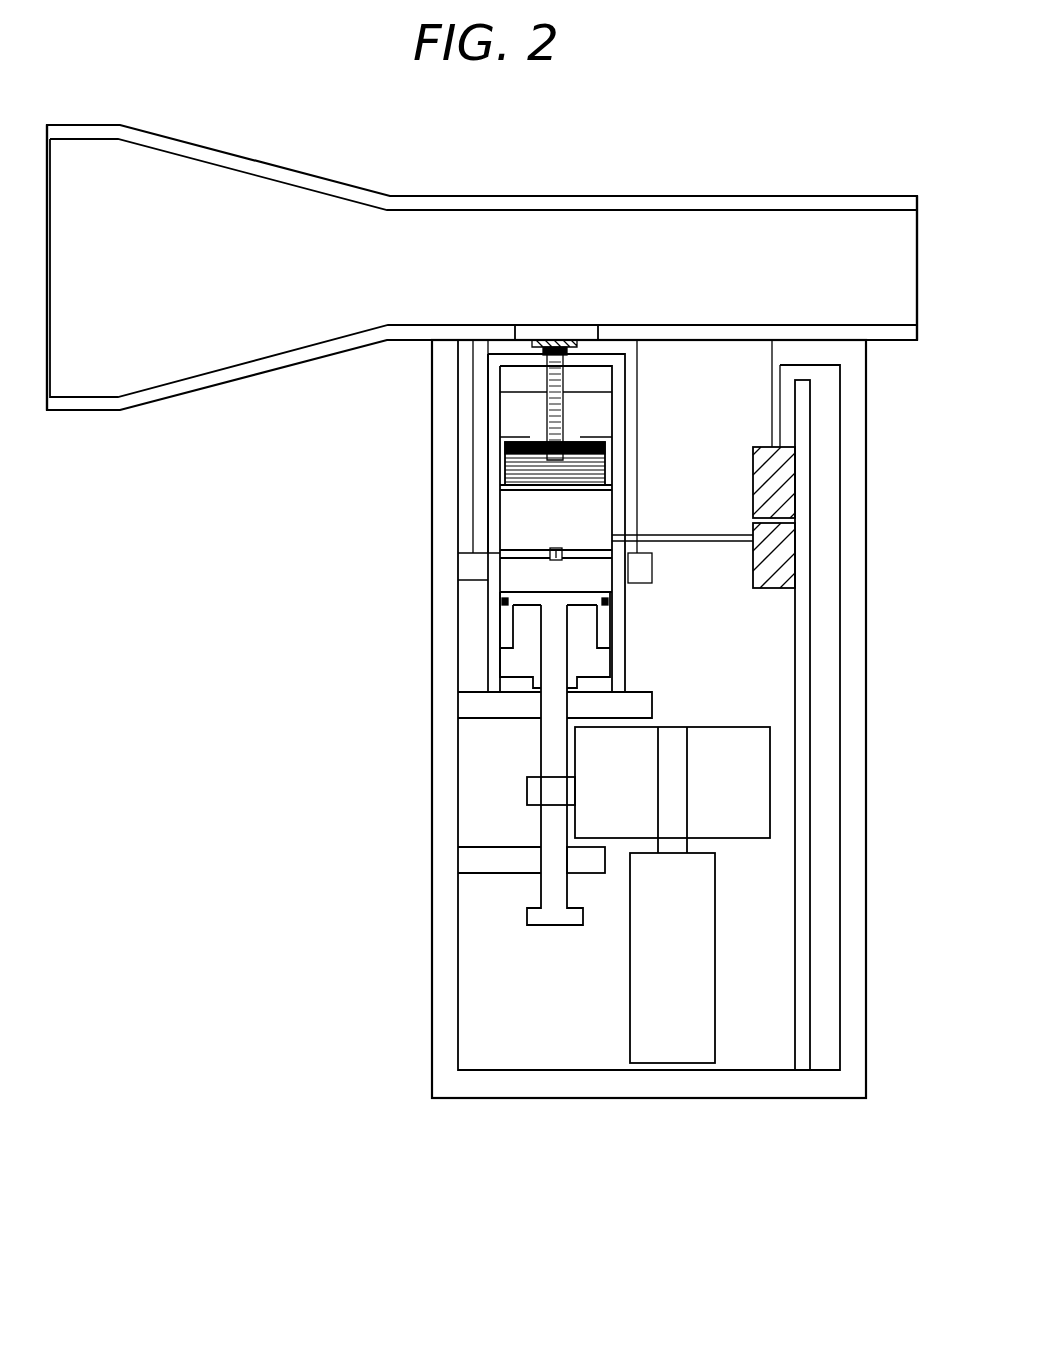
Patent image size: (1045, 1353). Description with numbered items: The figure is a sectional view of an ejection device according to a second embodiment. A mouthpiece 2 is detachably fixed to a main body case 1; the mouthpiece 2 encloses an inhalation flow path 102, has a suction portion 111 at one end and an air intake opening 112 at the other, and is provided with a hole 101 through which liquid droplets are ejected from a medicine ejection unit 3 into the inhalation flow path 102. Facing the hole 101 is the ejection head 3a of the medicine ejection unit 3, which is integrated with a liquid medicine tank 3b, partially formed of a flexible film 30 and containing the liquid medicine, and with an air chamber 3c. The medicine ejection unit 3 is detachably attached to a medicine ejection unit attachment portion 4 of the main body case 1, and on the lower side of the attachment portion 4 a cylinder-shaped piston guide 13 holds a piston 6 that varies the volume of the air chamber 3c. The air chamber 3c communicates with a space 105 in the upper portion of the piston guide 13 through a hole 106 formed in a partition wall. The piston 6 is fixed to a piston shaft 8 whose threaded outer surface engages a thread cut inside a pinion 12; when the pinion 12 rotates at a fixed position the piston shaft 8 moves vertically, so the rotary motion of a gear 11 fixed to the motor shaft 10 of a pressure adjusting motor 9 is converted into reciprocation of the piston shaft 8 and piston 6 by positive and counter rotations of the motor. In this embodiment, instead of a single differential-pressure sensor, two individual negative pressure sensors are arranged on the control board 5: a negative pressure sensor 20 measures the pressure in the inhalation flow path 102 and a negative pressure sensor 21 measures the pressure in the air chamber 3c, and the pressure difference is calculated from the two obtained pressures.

The main body case 1 is at (495, 1090).
The mouthpiece 2 is at (338, 190).
The medicine ejection unit 3 is at (461, 520).
The ejection head 3a is at (526, 348).
The liquid medicine tank 3b is at (503, 457).
The air chamber 3c is at (520, 507).
The medicine ejection unit attachment portion 4 is at (492, 533).
The control board 5 is at (808, 683).
The piston 6 is at (502, 615).
The piston shaft 8 is at (548, 898).
The pressure adjusting motor 9 is at (670, 1052).
The motor shaft 10 is at (677, 832).
The gear 11 is at (748, 757).
The pinion 12 is at (542, 792).
The piston guide 13 is at (493, 660).
The negative pressure sensor 20 is at (775, 472).
The negative pressure sensor 21 is at (780, 553).
The flexible film 30 is at (543, 490).
The hole 101 is at (551, 332).
The inhalation flow path 102 is at (603, 262).
The space 105 is at (517, 579).
The hole 106 is at (553, 556).
The suction portion 111 is at (125, 355).
The air intake opening 112 is at (895, 270).